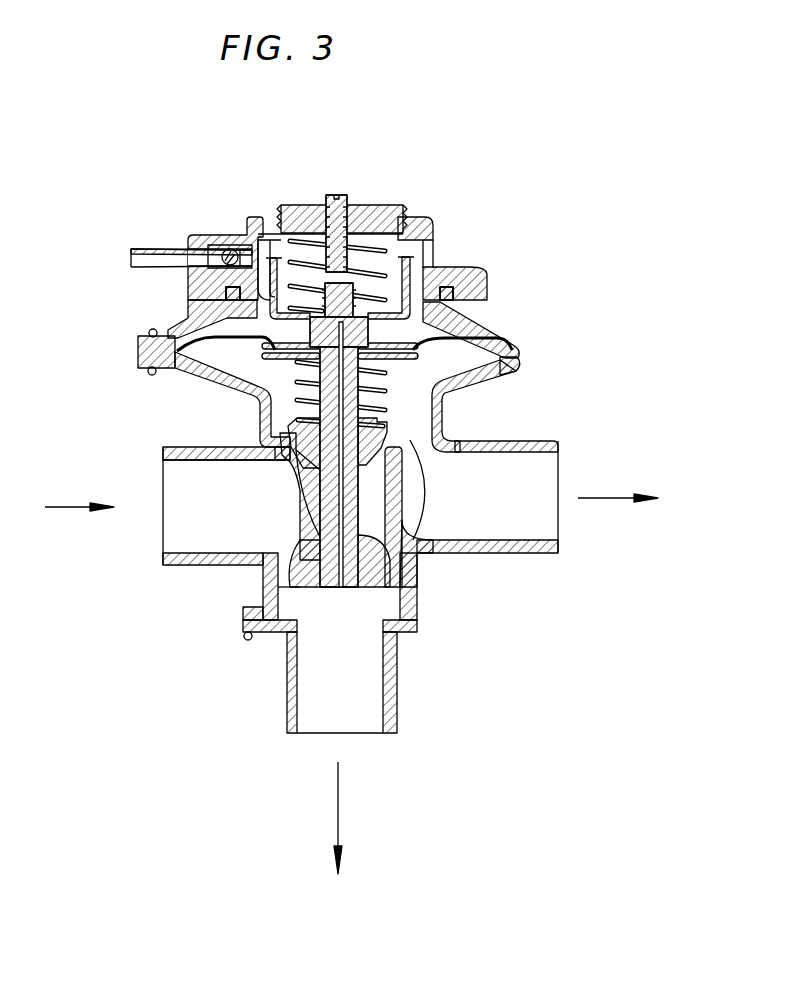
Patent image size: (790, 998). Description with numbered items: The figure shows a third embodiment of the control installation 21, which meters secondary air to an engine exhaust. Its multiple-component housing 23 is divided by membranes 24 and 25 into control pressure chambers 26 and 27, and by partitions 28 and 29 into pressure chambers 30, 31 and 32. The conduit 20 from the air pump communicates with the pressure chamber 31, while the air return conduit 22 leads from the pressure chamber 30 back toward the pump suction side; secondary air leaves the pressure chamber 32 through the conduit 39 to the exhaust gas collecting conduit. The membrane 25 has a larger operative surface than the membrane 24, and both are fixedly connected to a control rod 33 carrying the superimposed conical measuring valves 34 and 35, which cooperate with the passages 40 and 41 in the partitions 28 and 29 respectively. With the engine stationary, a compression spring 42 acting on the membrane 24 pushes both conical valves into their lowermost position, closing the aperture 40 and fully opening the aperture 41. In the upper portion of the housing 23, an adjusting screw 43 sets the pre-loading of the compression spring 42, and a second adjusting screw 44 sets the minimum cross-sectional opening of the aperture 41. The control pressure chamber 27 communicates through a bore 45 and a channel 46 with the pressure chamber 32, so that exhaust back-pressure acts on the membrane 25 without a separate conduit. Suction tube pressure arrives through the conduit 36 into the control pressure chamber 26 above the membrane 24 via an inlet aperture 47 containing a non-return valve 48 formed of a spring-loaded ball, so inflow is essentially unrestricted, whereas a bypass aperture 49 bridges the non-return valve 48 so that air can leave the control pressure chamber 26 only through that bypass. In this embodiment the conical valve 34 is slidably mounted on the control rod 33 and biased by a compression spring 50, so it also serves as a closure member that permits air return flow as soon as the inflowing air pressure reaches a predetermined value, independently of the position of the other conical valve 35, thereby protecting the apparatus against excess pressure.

The conduit 20 is at (183, 532).
The control installation 21 is at (243, 683).
The air return conduit 22 is at (540, 522).
The multiple-component housing 23 is at (437, 407).
The membrane 24 is at (420, 265).
The membrane 25 is at (480, 345).
The control pressure chamber 26 is at (413, 253).
The control pressure chamber 27 is at (447, 333).
The partition 28 is at (287, 452).
The partition 29 is at (263, 565).
The pressure chamber 30 is at (240, 365).
The pressure chamber 31 is at (398, 521).
The pressure chamber 32 is at (383, 605).
The control rod 33 is at (307, 373).
The conical measuring valve 34 is at (307, 437).
The conical measuring valve 35 is at (313, 580).
The conduit 36 is at (138, 270).
The conduit 39 is at (367, 700).
The passage 40 is at (395, 437).
The passage 41 is at (376, 558).
The compression spring 42 is at (385, 250).
The adjusting screw 43 is at (369, 214).
The second adjusting screw 44 is at (333, 205).
The bore 45 is at (372, 333).
The channel 46 is at (345, 490).
The inlet aperture 47 is at (246, 248).
The non-return valve 48 is at (228, 249).
The bypass aperture 49 is at (220, 252).
The compression spring 50 is at (373, 410).